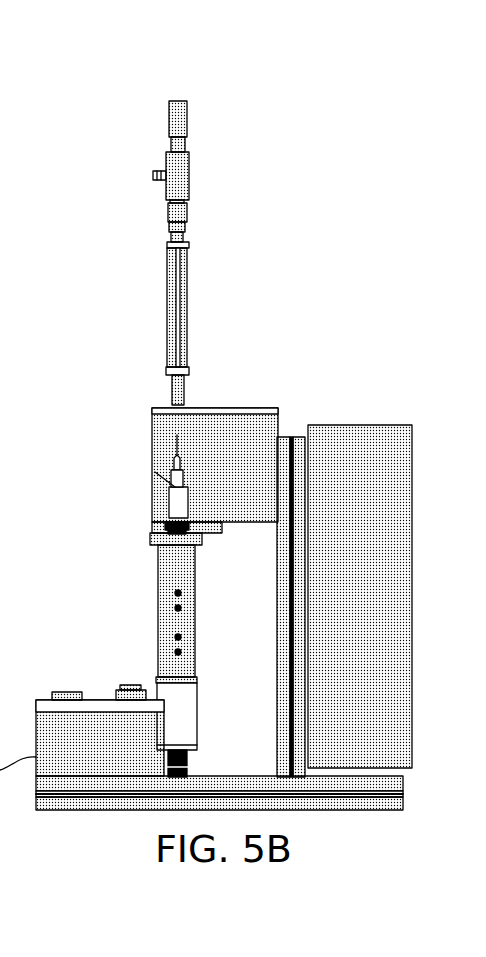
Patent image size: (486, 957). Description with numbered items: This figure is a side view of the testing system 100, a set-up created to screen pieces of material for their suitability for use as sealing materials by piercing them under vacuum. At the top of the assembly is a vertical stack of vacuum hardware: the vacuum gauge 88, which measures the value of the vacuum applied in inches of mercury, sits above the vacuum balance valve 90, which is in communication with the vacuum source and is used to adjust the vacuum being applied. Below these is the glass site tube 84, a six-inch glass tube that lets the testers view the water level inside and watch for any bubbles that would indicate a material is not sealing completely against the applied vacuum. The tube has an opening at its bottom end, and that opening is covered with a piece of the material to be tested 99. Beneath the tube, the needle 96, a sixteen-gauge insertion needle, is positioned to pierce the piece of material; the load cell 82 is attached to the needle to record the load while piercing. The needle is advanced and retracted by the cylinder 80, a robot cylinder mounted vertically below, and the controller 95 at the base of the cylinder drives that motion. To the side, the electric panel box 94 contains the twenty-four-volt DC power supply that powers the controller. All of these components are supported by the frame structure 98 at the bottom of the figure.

The testing system 100 is at (292, 235).
The vacuum gauge 88 is at (187, 113).
The vacuum balance valve 90 is at (167, 183).
The glass site tube 84 is at (171, 302).
The material to be tested 99 is at (178, 368).
The load cell 82 is at (198, 489).
The needle 96 is at (174, 448).
The cylinder 80 is at (158, 603).
The controller 95 is at (197, 702).
The electric panel box 94 is at (387, 423).
The frame structure 98 is at (402, 782).